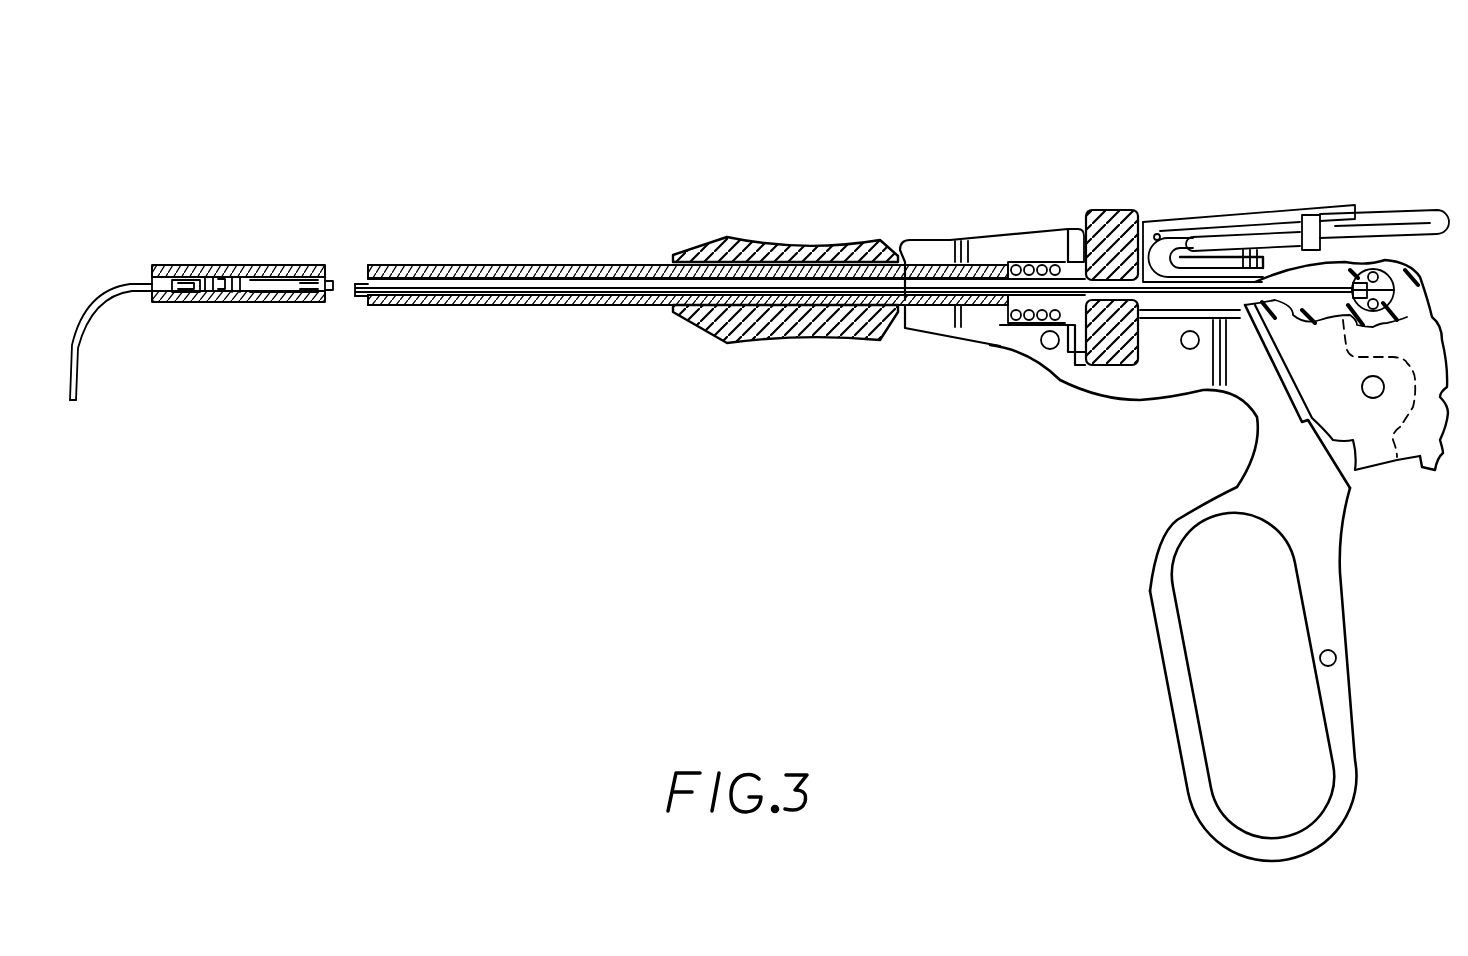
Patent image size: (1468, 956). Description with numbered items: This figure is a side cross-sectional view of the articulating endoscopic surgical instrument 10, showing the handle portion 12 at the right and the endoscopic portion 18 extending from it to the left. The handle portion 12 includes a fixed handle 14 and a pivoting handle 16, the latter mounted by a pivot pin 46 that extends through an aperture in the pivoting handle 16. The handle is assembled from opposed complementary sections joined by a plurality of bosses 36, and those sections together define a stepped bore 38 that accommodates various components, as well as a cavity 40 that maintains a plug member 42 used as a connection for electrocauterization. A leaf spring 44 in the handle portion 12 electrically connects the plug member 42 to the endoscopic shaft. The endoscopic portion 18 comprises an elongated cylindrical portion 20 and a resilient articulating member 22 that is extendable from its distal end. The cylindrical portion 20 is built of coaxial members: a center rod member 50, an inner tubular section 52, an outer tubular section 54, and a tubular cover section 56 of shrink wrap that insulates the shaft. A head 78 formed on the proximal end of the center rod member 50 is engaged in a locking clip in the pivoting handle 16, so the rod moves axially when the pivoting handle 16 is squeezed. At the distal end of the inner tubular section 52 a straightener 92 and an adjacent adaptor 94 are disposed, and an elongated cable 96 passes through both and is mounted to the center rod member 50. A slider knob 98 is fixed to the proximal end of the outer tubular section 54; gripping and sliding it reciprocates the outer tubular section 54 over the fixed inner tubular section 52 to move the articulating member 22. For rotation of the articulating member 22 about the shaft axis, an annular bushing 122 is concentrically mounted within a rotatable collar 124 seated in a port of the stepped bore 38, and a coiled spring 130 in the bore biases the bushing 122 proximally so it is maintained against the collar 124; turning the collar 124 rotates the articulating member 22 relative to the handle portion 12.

The articulating endoscopic surgical instrument 10 is at (612, 133).
The handle portion 12 is at (1185, 458).
The fixed handle 14 is at (1323, 618).
The pivoting handle 16 is at (1415, 447).
The endoscopic portion 18 is at (478, 335).
The elongated cylindrical portion 20 is at (452, 305).
The articulating member 22 is at (92, 306).
The bosses 36 is at (1045, 352).
The stepped bore 38 is at (985, 262).
The cavity 40 is at (1157, 234).
The plug member 42 is at (1375, 216).
The leaf spring 44 is at (1180, 248).
The pivot pin 46 is at (1373, 398).
The center rod member 50 is at (290, 280).
The inner tubular section 52 is at (360, 300).
The outer tubular section 54 is at (493, 265).
The tubular cover section 56 is at (395, 265).
The head 78 is at (1392, 277).
The straightener 92 is at (222, 283).
The adaptor 94 is at (185, 292).
The elongated cable 96 is at (77, 392).
The slider knob 98 is at (748, 250).
The annular bushing 122 is at (1072, 255).
The rotatable collar 124 is at (1103, 222).
The coiled spring 130 is at (1012, 322).